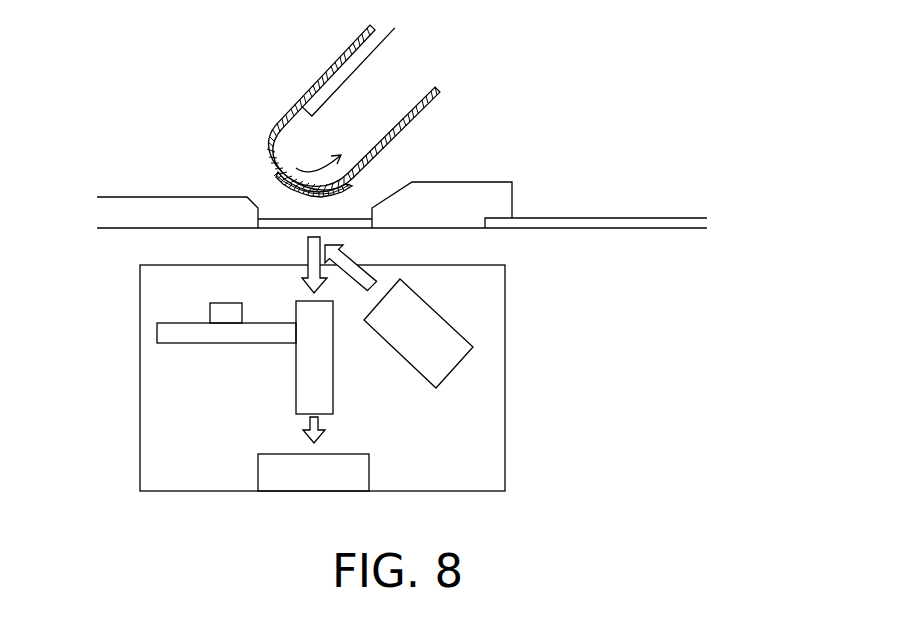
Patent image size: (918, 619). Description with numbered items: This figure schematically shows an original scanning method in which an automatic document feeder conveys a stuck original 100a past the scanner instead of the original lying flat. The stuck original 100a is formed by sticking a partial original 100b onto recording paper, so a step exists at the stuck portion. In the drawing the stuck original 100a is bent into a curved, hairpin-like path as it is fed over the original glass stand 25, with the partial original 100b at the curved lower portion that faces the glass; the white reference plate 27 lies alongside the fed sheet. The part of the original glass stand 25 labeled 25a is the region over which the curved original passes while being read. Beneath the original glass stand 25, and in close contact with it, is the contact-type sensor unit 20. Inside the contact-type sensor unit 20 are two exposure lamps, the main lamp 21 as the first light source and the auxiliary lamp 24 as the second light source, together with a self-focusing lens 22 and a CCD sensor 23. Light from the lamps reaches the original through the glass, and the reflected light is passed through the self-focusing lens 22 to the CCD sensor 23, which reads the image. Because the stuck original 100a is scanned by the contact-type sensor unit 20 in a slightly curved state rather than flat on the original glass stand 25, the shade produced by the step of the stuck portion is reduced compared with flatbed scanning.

The contact-type sensor (CIS) unit 20 is at (505, 428).
The main lamp 21 is at (443, 310).
The self-focusing lens 22 is at (335, 373).
The CCD sensor 23 is at (369, 470).
The auxiliary lamp 24 is at (230, 303).
The original glass stand 25 is at (583, 218).
The reading window 25a is at (272, 218).
The white reference plate 27 is at (388, 58).
The stuck original 100a is at (413, 117).
The partial original 100b is at (353, 180).